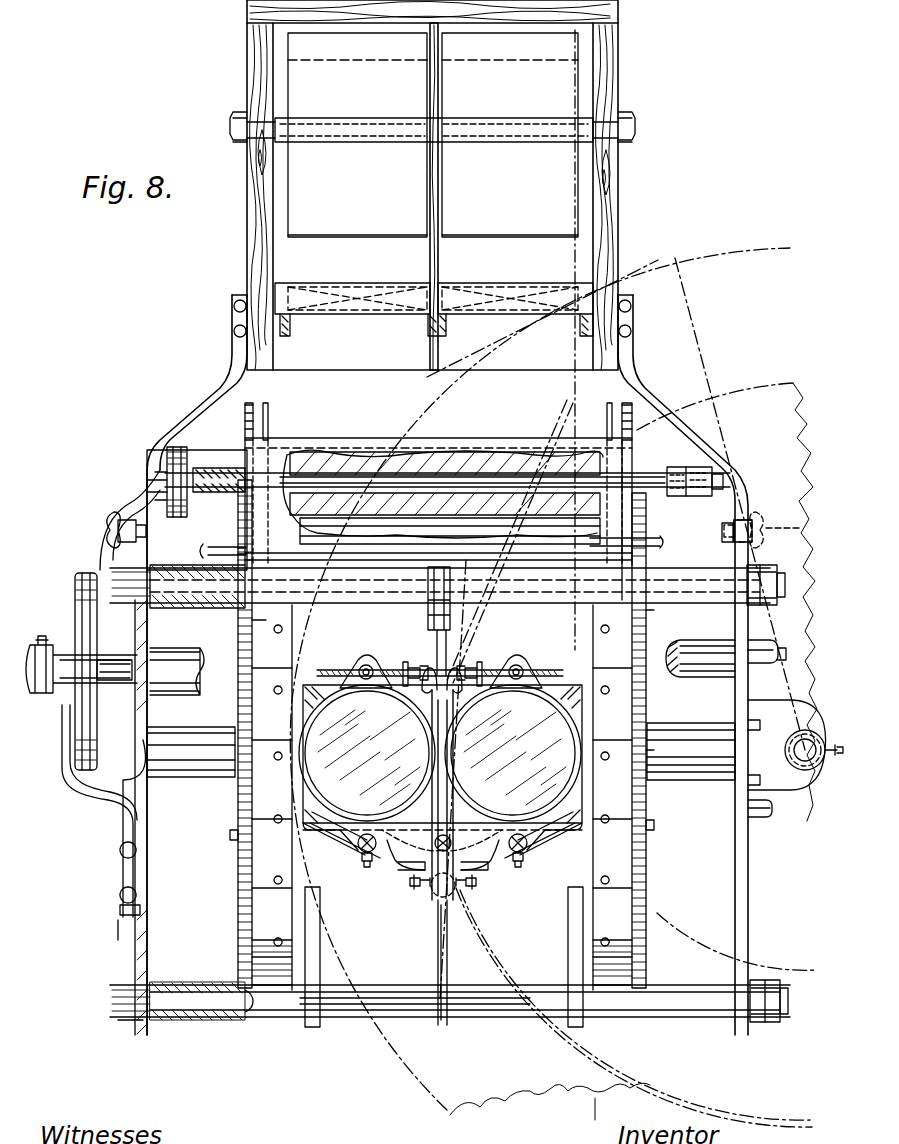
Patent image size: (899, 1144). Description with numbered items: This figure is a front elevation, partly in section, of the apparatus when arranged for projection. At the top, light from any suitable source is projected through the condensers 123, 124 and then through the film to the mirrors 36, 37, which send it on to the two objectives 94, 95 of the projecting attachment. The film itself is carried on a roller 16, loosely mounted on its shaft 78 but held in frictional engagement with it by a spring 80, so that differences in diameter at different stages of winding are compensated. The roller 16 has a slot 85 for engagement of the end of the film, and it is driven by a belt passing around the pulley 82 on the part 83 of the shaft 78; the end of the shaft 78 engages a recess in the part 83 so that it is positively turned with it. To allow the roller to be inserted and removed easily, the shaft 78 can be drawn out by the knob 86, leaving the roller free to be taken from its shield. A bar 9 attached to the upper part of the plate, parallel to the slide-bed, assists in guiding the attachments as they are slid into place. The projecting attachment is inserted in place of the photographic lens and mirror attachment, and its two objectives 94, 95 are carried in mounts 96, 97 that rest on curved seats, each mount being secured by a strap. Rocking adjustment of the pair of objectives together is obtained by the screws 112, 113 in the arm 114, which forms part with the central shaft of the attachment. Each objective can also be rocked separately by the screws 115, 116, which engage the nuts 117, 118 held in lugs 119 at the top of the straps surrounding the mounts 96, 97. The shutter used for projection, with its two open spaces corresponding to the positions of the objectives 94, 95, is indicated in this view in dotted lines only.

The bar 9 is at (553, 563).
The roller 16 is at (540, 455).
The mirror 36 is at (326, 812).
The mirror 37 is at (575, 815).
The shaft 78 is at (495, 462).
The spring 80 is at (334, 468).
The pulley 82 is at (180, 463).
The shaft part 83 is at (218, 480).
The slot 85 is at (455, 470).
The knob 86 is at (698, 470).
The objective 94 is at (367, 753).
The objective 95 is at (513, 753).
The mount 96 is at (305, 710).
The mount 97 is at (575, 708).
The screw 112 is at (410, 882).
The screw 113 is at (476, 882).
The arm 114 is at (447, 895).
The screw 115 is at (396, 672).
The screw 116 is at (484, 672).
The nut 117 is at (368, 664).
The nut 118 is at (520, 664).
The lug 119 is at (356, 670).
The condenser 123 is at (340, 296).
The condenser 124 is at (498, 296).